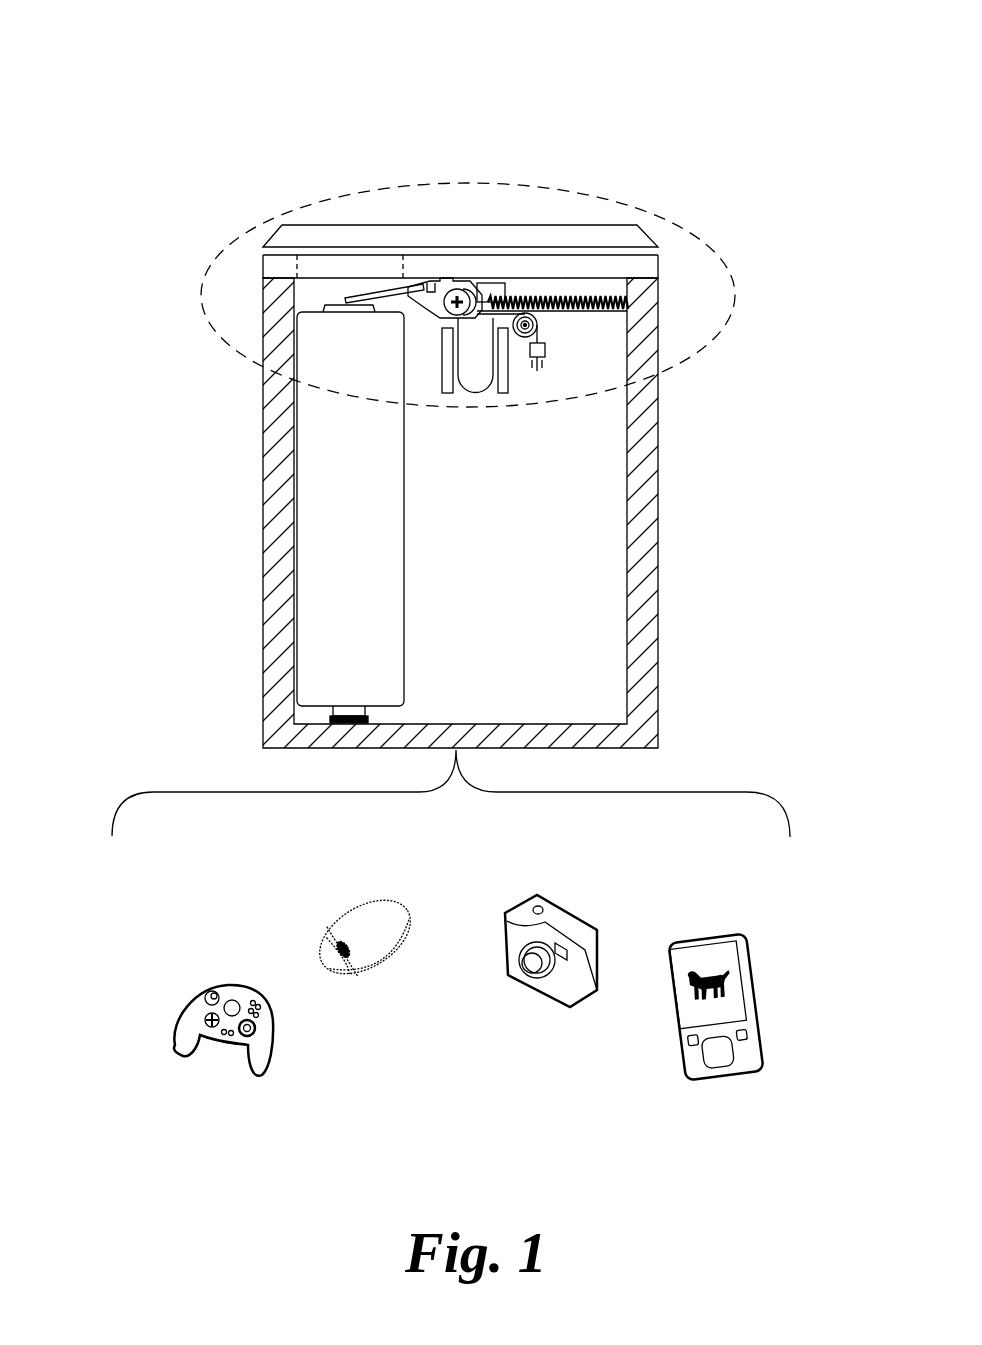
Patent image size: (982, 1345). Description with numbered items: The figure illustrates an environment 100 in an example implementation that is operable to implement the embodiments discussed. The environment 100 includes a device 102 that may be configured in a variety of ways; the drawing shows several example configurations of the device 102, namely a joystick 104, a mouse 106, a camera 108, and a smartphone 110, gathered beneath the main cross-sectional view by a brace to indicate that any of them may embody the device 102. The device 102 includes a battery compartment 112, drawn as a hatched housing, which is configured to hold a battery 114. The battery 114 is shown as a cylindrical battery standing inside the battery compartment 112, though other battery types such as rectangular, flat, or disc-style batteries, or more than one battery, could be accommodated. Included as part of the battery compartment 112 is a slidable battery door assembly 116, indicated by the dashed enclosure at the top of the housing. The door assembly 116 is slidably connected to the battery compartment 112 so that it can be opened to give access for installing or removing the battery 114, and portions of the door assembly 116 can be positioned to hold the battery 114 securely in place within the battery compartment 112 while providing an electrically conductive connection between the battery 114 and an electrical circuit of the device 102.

The environment 100 is at (168, 78).
The device 102 is at (255, 190).
The joystick 104 is at (200, 1005).
The mouse 106 is at (358, 907).
The camera 108 is at (518, 913).
The smartphone 110 is at (697, 945).
The battery compartment 112 is at (567, 714).
The battery 114 is at (331, 525).
The slidable battery door assembly 116 is at (203, 277).